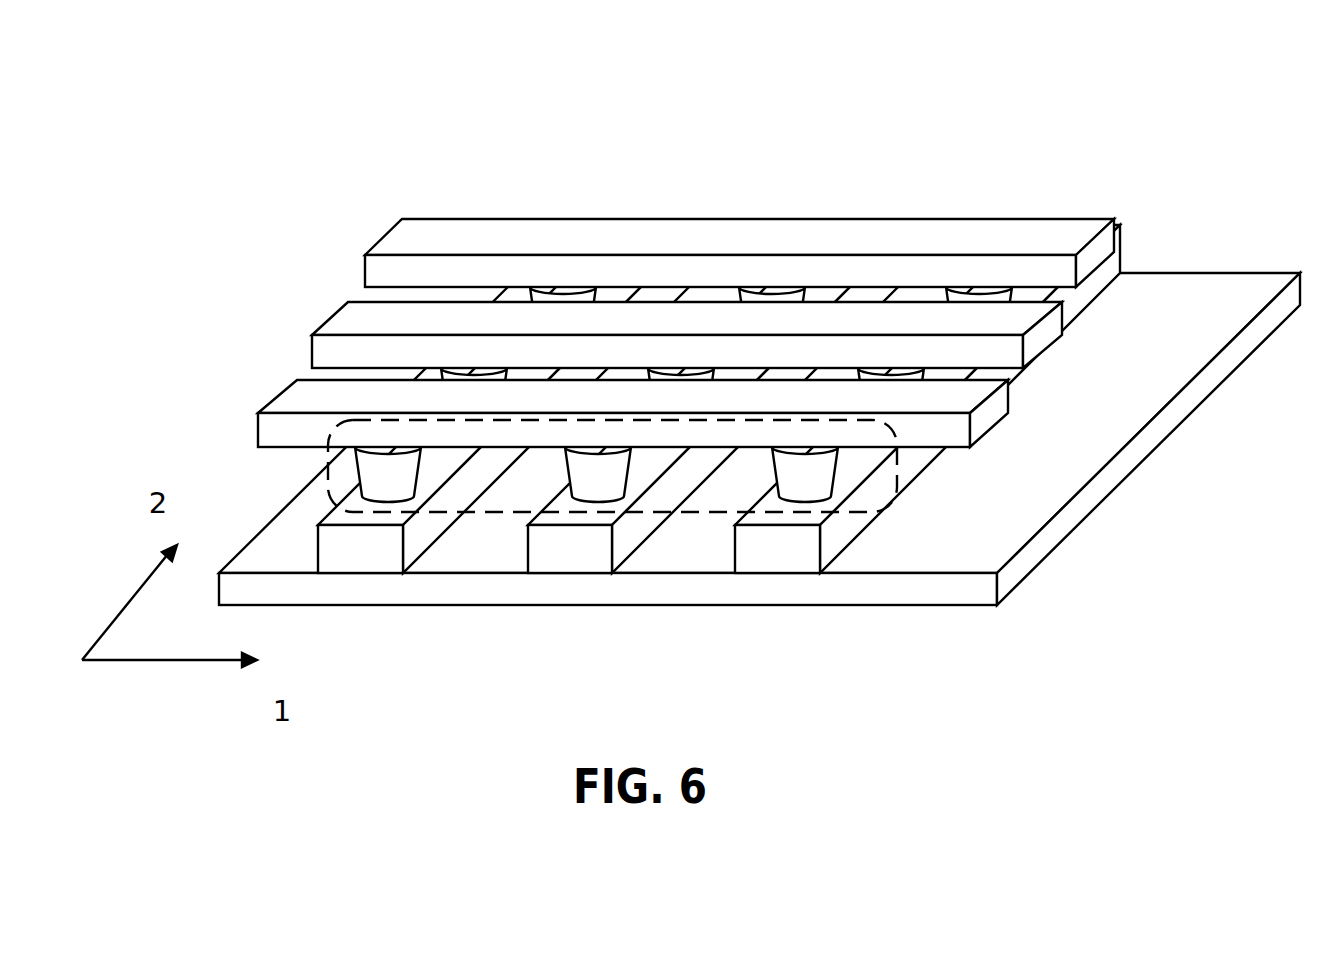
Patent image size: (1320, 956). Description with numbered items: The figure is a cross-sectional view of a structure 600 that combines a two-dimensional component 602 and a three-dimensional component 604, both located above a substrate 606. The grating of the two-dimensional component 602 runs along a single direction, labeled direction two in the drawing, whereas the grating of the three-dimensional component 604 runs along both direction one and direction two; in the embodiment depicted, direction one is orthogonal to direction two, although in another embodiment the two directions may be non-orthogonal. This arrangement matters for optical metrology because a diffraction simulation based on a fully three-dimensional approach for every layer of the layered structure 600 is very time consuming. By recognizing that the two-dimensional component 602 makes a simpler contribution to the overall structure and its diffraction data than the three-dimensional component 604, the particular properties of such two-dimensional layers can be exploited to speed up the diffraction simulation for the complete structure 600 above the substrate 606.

The structure 600 is at (736, 372).
The two-dimensional component 602 is at (643, 345).
The three-dimensional component 604 is at (710, 505).
The substrate 606 is at (1168, 417).